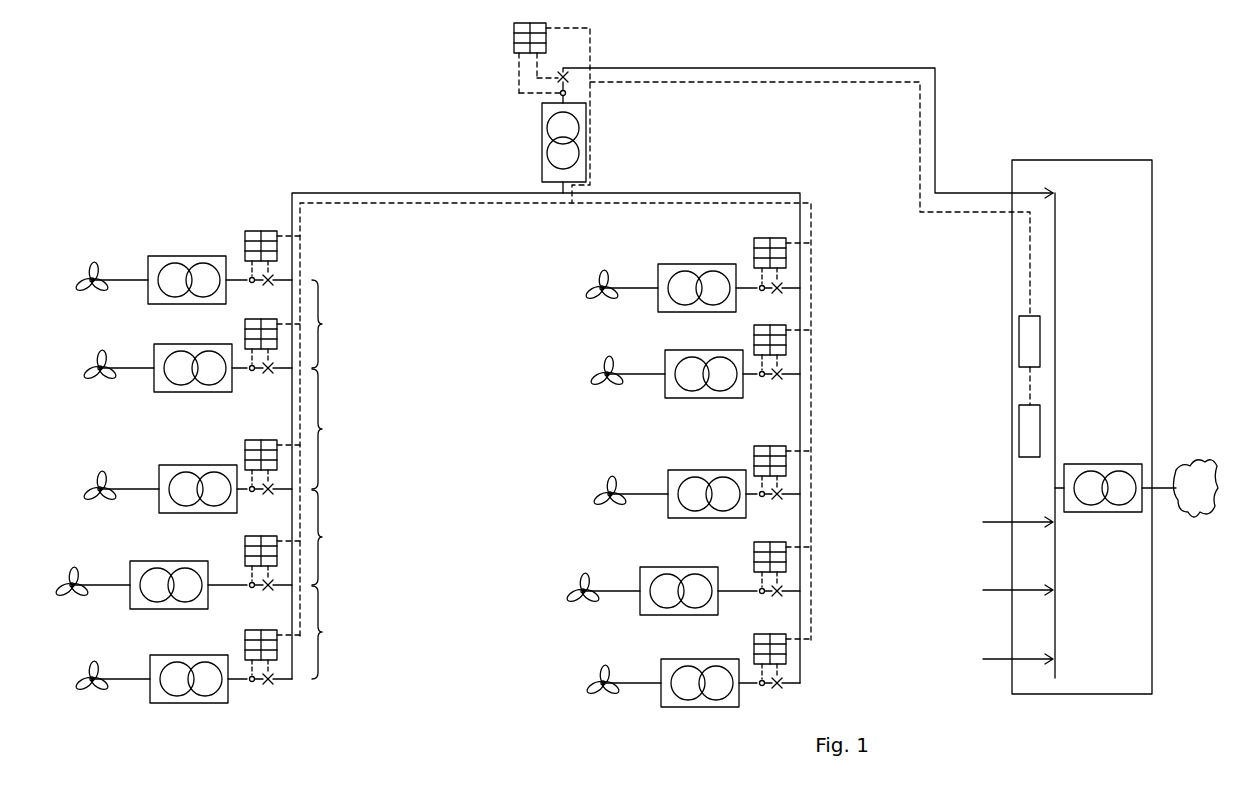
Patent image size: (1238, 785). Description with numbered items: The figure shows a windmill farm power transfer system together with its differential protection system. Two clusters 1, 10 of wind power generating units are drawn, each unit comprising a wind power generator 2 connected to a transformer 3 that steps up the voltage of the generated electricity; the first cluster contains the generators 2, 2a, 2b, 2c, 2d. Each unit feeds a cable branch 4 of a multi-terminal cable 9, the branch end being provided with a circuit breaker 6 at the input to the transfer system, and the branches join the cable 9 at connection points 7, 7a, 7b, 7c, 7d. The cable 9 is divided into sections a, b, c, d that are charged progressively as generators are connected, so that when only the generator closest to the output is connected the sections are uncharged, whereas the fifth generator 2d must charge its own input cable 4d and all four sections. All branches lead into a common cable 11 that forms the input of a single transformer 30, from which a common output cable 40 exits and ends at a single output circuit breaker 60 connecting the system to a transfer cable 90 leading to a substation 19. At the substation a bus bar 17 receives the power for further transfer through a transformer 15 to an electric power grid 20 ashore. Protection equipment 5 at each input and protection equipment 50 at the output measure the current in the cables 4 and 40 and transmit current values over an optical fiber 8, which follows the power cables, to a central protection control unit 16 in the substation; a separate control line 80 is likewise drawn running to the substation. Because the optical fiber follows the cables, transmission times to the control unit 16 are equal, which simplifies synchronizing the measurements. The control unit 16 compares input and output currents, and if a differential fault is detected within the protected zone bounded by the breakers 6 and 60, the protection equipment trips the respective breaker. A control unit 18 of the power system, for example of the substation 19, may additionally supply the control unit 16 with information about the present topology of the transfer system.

The cluster of wind power generators 1 is at (195, 719).
The wind power generator 2 is at (88, 266).
The second wind power generator 2a is at (100, 353).
The wind power generator 2b is at (100, 475).
The wind power generator 2c is at (72, 570).
The fifth wind power generator 2d is at (92, 665).
The transformer 3 is at (166, 256).
The cable branch 4 is at (250, 284).
The input cable of fifth generator 4d is at (250, 684).
The protection equipment 5 is at (245, 236).
The circuit breaker 6 is at (270, 285).
The bus connection point 7 is at (292, 278).
The bus connection point 7a is at (290, 372).
The bus connection point 7b is at (290, 493).
The bus connection point 7c is at (290, 589).
The bus connection point 7d is at (290, 683).
The optical fiber 8 is at (385, 205).
The multi-terminal cable 9 is at (358, 193).
The cluster of wind power generators 10 is at (707, 719).
The common cable 11 is at (562, 191).
The grid transformer 15 is at (1083, 465).
The central protection control unit 16 is at (1019, 320).
The bus bar 17 is at (1055, 268).
The control unit of the power system 18 is at (1019, 410).
The substation 19 is at (1112, 160).
The electric power grid 20 is at (1180, 488).
The transformer 30 is at (540, 127).
The common output cable 40 is at (568, 89).
The protection equipment 50 is at (514, 38).
The circuit breaker 60 is at (568, 77).
The control line 80 is at (590, 46).
The transfer cable 90 is at (700, 68).
The cable section a is at (324, 324).
The cable section b is at (324, 429).
The cable section c is at (324, 537).
The cable section d is at (324, 632).